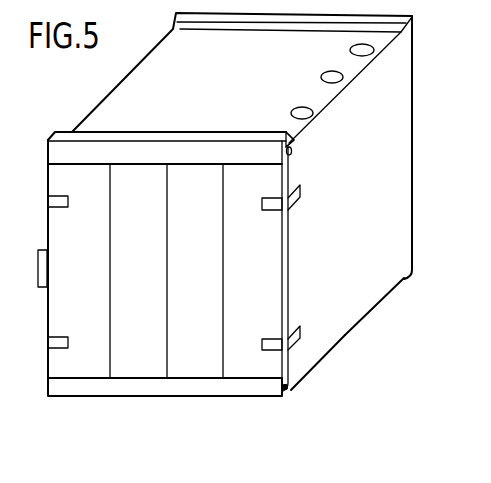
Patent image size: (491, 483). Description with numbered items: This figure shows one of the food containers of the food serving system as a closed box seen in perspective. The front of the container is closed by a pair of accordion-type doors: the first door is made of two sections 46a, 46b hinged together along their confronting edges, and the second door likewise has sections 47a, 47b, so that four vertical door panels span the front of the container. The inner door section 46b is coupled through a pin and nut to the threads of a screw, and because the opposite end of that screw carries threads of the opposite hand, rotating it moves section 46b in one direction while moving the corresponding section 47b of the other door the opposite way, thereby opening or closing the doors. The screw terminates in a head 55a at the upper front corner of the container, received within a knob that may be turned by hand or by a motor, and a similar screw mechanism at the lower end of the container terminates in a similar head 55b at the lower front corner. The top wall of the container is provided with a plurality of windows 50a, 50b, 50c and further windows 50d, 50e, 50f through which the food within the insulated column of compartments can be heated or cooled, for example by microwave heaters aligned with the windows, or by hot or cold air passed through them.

The door section 46a is at (250, 363).
The inner door section 46b is at (192, 355).
The door section 47a is at (90, 355).
The door section 47b is at (132, 355).
The window 50a is at (374, 50).
The window 50b is at (344, 77).
The window 50c is at (312, 116).
The window 50d is at (399, 279).
The window 50e is at (363, 308).
The window 50f is at (311, 360).
The screw head 55a is at (286, 132).
The screw head 55b is at (291, 391).